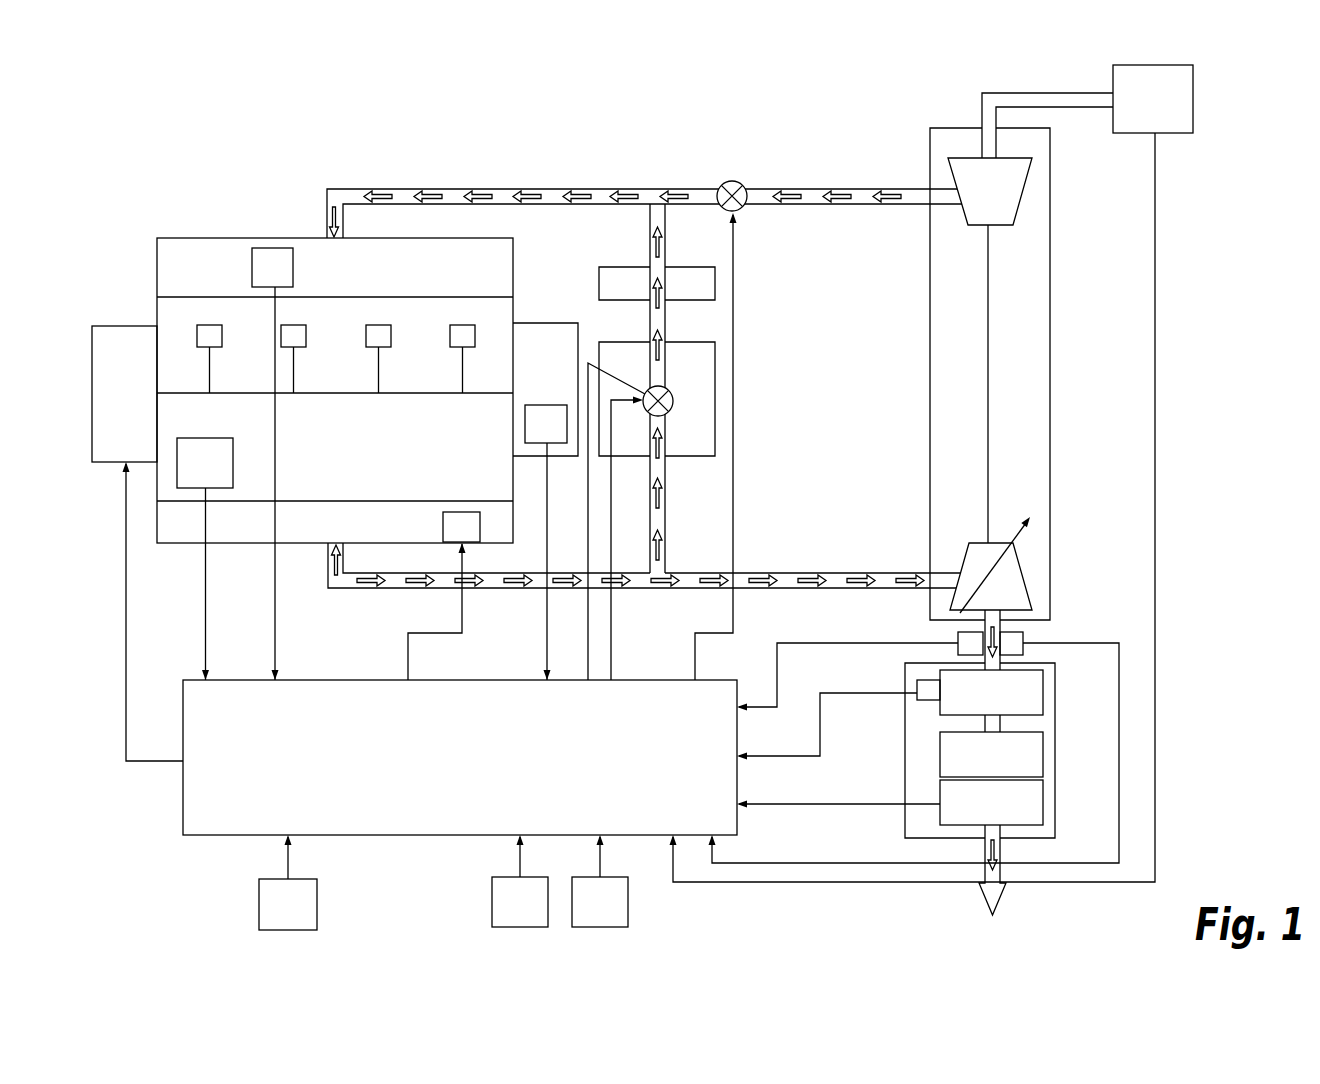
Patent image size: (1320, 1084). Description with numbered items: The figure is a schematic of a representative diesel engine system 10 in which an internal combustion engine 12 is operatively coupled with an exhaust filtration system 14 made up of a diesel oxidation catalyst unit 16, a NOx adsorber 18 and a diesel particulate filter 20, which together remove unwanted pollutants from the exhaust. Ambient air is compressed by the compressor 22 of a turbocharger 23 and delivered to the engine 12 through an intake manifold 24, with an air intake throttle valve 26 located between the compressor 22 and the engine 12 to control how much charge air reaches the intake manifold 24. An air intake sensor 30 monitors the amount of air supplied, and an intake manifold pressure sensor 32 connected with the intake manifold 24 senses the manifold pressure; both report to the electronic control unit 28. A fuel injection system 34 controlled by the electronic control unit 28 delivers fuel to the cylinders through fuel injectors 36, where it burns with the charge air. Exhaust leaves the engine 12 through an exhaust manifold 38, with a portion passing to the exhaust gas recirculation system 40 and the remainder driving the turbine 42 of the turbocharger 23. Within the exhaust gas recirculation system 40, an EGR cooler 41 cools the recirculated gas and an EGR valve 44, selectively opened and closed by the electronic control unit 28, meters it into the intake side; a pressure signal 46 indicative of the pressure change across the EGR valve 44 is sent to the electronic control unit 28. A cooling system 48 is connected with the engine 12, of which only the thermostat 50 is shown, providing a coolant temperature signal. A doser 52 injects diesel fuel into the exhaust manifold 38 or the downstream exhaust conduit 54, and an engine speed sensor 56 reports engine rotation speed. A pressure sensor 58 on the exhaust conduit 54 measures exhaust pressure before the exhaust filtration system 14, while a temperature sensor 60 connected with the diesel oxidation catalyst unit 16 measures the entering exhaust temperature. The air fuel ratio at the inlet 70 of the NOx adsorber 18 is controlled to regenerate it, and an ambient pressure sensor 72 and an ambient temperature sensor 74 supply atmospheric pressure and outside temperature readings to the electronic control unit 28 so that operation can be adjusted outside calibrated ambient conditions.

The system 10 is at (449, 160).
The internal combustion engine 12 is at (421, 453).
The exhaust filtration system 14 is at (1055, 723).
The diesel oxidation catalyst unit 16 is at (1043, 685).
The NOx adsorber 18 is at (1043, 750).
The diesel particulate filter 20 is at (1043, 808).
The compressor 22 is at (1022, 198).
The turbocharger 23 is at (930, 278).
The intake manifold 24 is at (193, 255).
The air intake throttle valve 26 is at (732, 181).
The electronic control unit 28 is at (322, 680).
The air intake sensor 30 is at (1175, 140).
The intake manifold pressure sensor 32 is at (262, 248).
The fuel injection system 34 is at (112, 326).
The fuel injectors 36 is at (306, 341).
The exhaust manifold 38 is at (178, 528).
The exhaust gas recirculation system 40 is at (715, 367).
The EGR cooler 41 is at (599, 272).
The turbine 42 is at (1027, 578).
The EGR valve 44 is at (671, 413).
The pressure signal 46 is at (588, 545).
The cooling system 48 is at (547, 323).
The thermostat 50 is at (532, 443).
The doser 52 is at (457, 512).
The exhaust conduit 54 is at (793, 573).
The engine speed sensor 56 is at (233, 447).
The pressure sensor 58 is at (958, 638).
The temperature sensor 60 is at (917, 686).
The inlet 70 is at (985, 730).
The ambient pressure sensor 72 is at (492, 897).
The ambient temperature sensor 74 is at (630, 897).